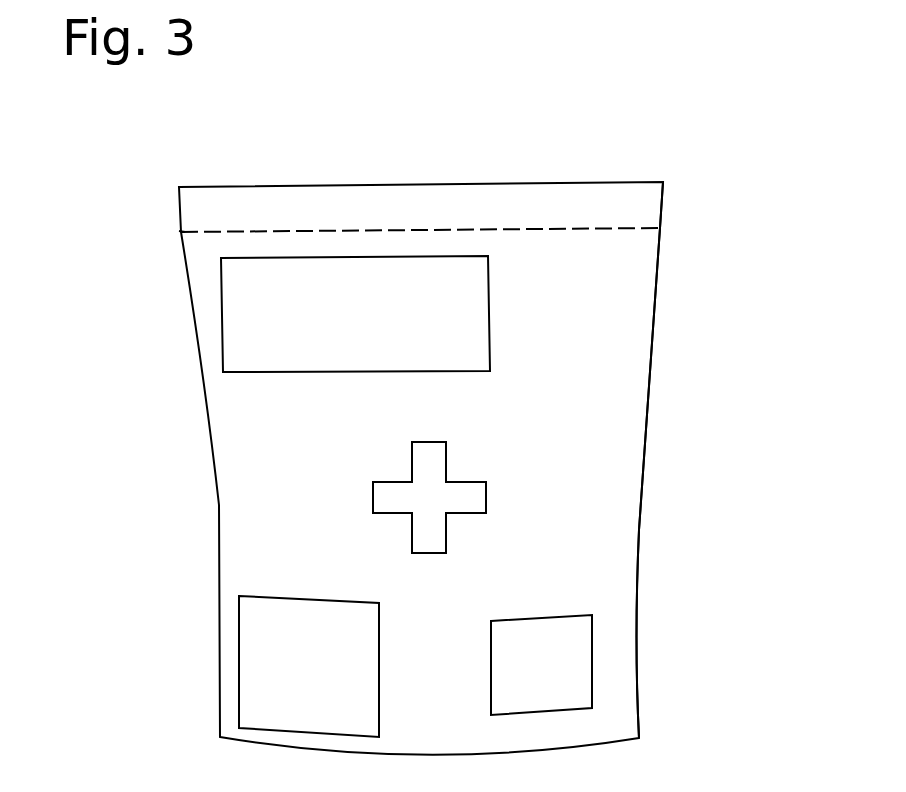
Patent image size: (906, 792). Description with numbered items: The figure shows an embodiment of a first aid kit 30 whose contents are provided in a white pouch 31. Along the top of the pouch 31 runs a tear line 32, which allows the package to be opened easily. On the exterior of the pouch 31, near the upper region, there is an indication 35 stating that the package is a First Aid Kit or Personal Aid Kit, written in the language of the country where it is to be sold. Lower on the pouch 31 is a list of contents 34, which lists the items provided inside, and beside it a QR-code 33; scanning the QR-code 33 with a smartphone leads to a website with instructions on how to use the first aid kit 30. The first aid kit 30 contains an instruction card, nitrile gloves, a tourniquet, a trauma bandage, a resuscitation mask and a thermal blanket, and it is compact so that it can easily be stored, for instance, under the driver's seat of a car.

The first aid kit 30 is at (707, 167).
The pouch 31 is at (637, 341).
The tear line 32 is at (565, 228).
The QR-code 33 is at (568, 656).
The list of contents 34 is at (239, 627).
The indication 35 is at (218, 293).